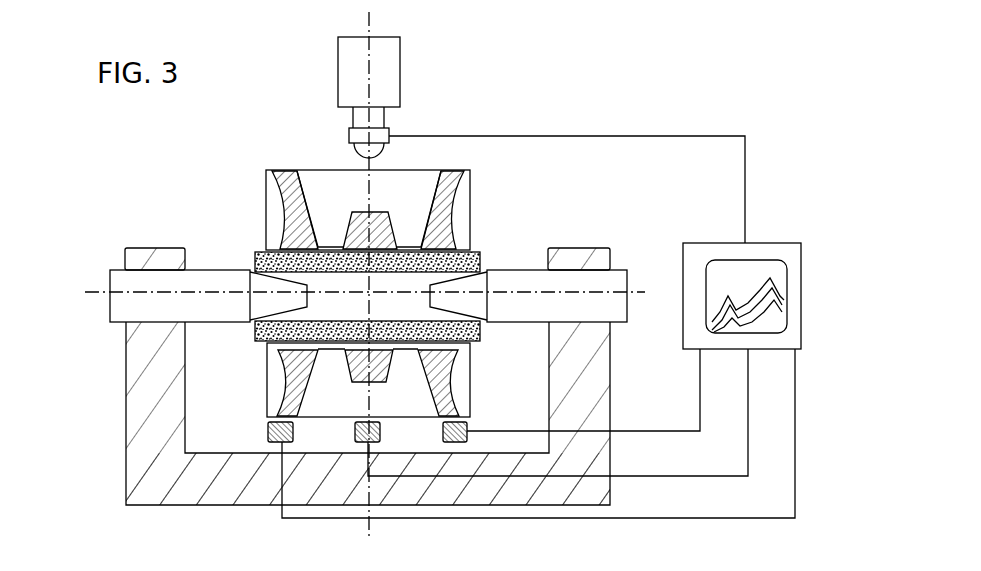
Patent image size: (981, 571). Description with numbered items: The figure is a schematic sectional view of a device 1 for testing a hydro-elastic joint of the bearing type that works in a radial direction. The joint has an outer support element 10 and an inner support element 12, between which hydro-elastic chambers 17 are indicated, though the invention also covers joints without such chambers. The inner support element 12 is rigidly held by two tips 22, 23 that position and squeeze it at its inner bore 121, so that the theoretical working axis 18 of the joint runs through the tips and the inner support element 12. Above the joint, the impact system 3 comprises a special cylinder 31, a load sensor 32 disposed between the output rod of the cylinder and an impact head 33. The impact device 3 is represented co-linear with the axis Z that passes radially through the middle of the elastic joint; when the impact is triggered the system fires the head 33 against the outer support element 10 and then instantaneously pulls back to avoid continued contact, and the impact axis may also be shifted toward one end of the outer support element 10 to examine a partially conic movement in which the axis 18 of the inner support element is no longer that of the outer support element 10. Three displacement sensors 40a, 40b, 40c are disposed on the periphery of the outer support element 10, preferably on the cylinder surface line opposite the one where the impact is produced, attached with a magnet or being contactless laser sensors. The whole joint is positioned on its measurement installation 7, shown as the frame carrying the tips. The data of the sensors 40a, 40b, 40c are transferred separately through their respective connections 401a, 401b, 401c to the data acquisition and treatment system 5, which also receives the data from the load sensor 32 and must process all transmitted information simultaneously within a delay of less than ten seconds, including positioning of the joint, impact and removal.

The axis Z is at (378, 26).
The measuring device 1 is at (445, 328).
The impact system 3 is at (380, 97).
The special cylinder 31 is at (406, 68).
The load sensor 32 is at (394, 125).
The impact head 33 is at (352, 150).
The outer support element 10 is at (343, 195).
The hydro-elastic chambers 17 is at (332, 190).
The inner support element 12 is at (483, 262).
The inner bore 121 is at (315, 322).
The theoretical working axis 18 is at (92, 288).
The tip 22 is at (518, 266).
The tip 23 is at (222, 266).
The measurement installation 7 is at (190, 380).
The displacement sensor 40a is at (266, 433).
The displacement sensor 40b is at (353, 437).
The displacement sensor 40c is at (441, 428).
The connection 401a is at (660, 517).
The connection 401b is at (642, 475).
The connection 401c is at (650, 412).
The data acquisition and treatment system 5 is at (775, 241).